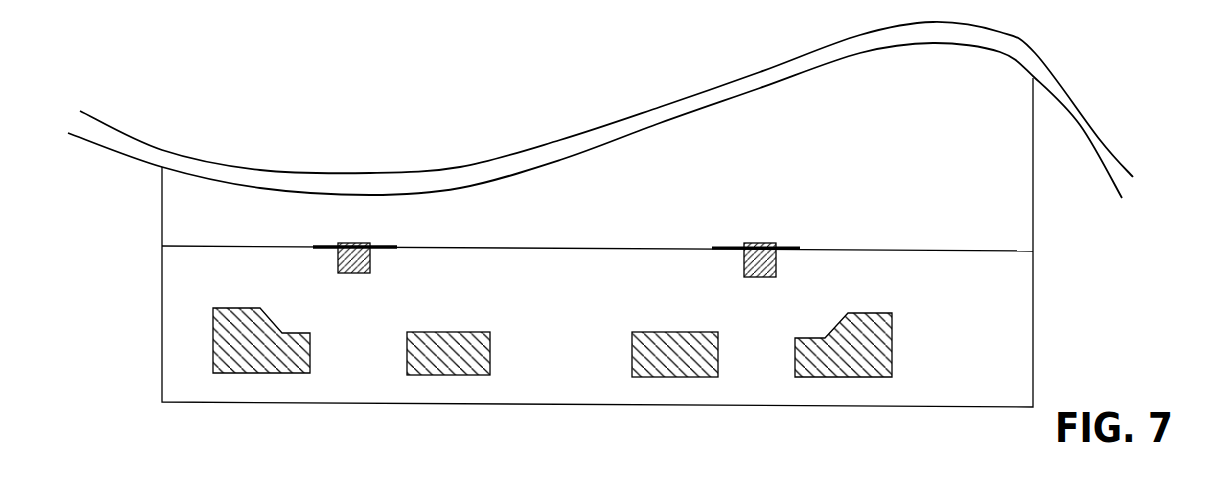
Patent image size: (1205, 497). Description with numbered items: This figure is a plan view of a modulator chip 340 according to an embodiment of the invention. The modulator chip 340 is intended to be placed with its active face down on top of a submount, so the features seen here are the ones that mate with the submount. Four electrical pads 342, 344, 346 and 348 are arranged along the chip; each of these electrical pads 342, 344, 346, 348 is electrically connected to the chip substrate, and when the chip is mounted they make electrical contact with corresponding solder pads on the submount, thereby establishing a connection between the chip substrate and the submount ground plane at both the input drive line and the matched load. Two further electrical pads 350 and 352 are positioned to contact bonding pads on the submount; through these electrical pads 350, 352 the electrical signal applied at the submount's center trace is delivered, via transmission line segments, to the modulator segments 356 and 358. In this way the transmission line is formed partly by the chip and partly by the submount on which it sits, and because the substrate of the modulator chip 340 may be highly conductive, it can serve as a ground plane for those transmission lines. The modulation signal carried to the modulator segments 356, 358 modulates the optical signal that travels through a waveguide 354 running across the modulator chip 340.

The modulator chip 340 is at (1033, 328).
The electrical pad 342 is at (310, 353).
The electrical pad 344 is at (490, 345).
The electrical pad 346 is at (630, 353).
The electrical pad 348 is at (892, 348).
The electrical pad 350 is at (353, 273).
The electrical pad 352 is at (755, 277).
The waveguide 354 is at (200, 246).
The modulator segment 356 is at (387, 247).
The modulator segment 358 is at (795, 250).